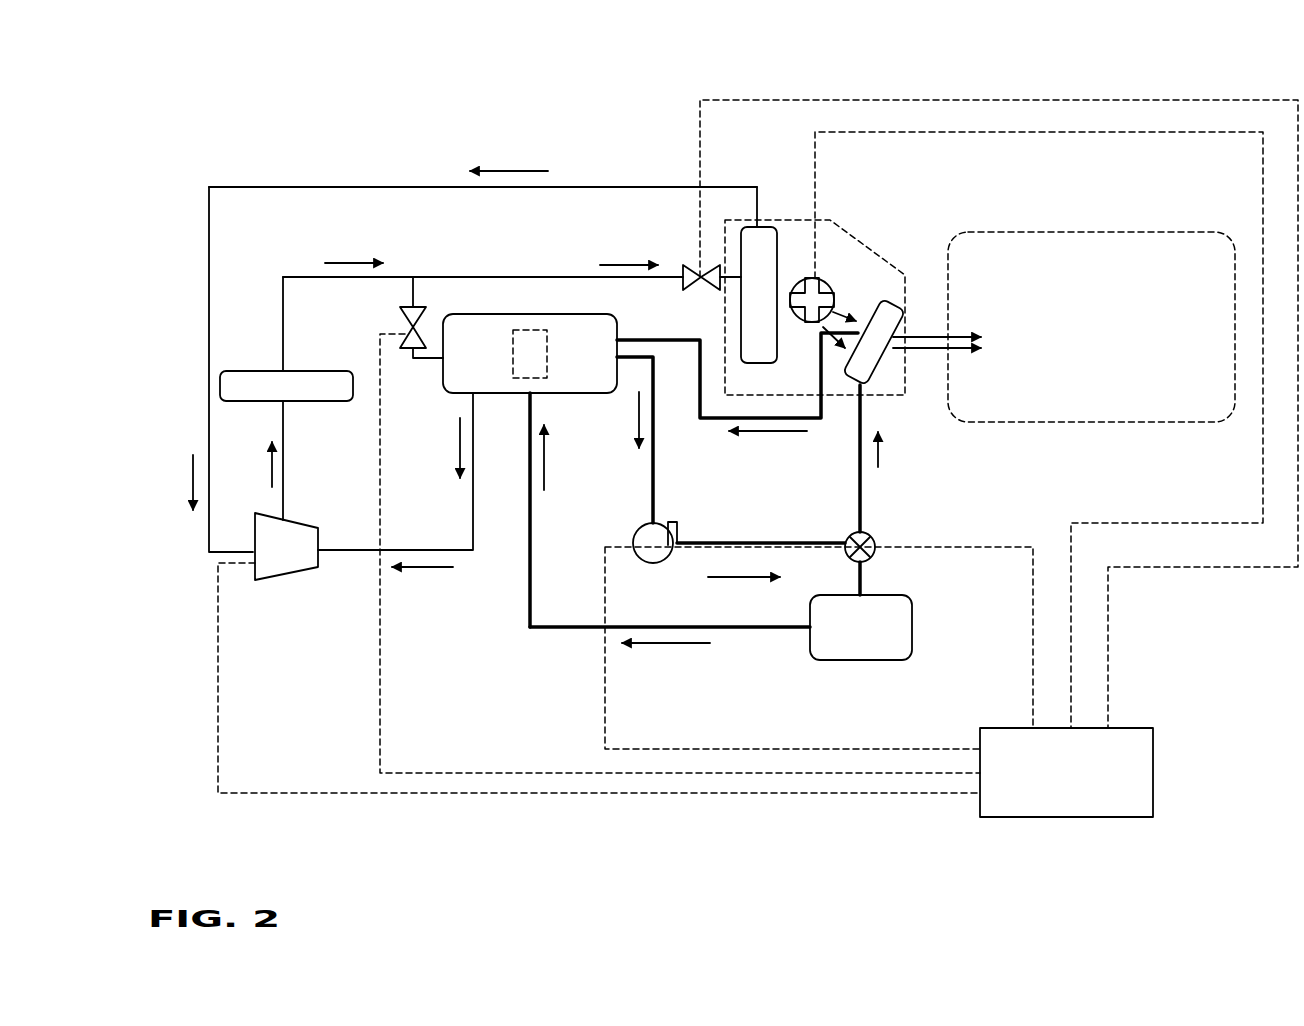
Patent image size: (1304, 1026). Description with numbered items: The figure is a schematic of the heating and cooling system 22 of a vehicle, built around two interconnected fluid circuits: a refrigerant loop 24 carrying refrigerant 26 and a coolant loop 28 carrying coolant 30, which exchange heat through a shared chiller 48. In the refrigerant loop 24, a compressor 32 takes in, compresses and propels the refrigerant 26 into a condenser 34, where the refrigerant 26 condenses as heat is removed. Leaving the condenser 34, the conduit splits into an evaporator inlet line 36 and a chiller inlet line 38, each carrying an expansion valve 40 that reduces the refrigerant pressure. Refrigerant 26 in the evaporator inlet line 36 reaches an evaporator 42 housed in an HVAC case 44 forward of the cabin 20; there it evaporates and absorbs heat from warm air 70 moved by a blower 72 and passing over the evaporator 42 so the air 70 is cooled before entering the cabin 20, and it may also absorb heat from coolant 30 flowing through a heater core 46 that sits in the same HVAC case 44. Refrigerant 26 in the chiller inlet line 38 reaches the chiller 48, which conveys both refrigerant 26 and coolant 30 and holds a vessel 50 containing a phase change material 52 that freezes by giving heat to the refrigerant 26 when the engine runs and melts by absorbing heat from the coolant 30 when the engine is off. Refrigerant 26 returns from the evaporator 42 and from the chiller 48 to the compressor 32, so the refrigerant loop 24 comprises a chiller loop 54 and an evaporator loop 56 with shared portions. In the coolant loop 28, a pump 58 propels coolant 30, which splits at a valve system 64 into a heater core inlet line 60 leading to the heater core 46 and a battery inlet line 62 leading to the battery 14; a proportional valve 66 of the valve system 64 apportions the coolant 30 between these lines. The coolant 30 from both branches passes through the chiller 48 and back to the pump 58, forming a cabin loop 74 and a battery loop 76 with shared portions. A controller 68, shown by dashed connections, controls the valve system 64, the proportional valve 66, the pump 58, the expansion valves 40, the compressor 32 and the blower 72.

The battery 14 is at (858, 662).
The cabin 20 is at (1113, 232).
The heating and cooling system 22 is at (616, 76).
The refrigerant loop 24 is at (483, 377).
The refrigerant 26 is at (490, 171).
The coolant loop 28 is at (747, 519).
The coolant 30 is at (546, 445).
The compressor 32 is at (288, 567).
The condenser 34 is at (268, 365).
The evaporator inlet line 36 is at (565, 275).
The chiller inlet line 38 is at (413, 294).
The expansion valve 40 is at (405, 323).
The evaporator 42 is at (765, 245).
The HVAC case 44 is at (832, 222).
The heater core 46 is at (876, 370).
The chiller 48 is at (530, 464).
The vessel 50 is at (525, 378).
The phase change material 52 is at (527, 357).
The chiller loop 54 is at (345, 553).
The evaporator loop 56 is at (362, 187).
The pump 58 is at (640, 525).
The heater core inlet line 60 is at (862, 510).
The battery inlet line 62 is at (862, 580).
The valve system 64 is at (882, 537).
The proportional valve 66 is at (848, 535).
The controller 68 is at (1063, 818).
The air 70 is at (942, 348).
The blower 72 is at (820, 278).
The cabin loop 74 is at (858, 420).
The battery loop 76 is at (730, 630).